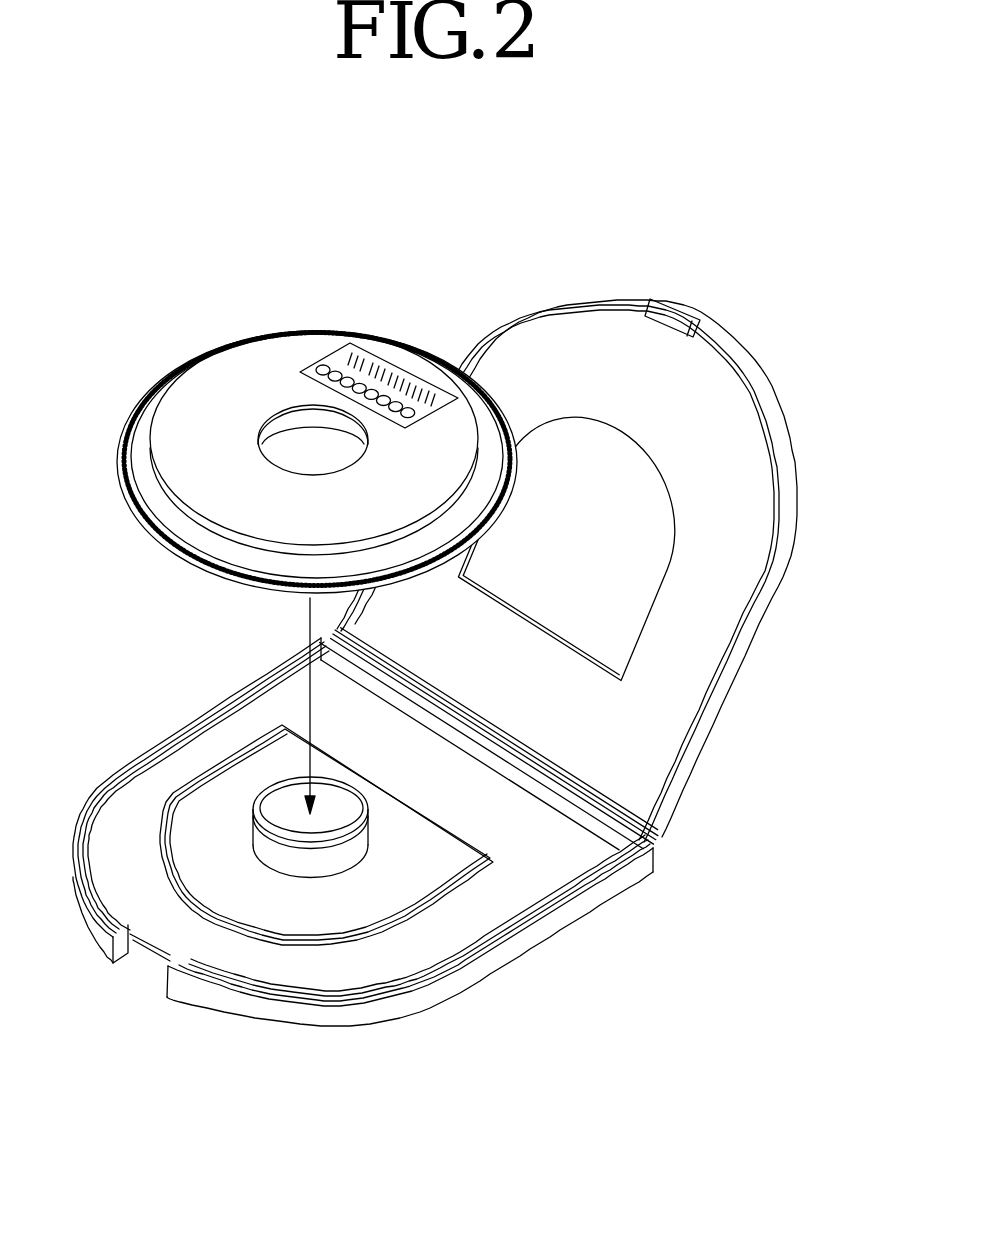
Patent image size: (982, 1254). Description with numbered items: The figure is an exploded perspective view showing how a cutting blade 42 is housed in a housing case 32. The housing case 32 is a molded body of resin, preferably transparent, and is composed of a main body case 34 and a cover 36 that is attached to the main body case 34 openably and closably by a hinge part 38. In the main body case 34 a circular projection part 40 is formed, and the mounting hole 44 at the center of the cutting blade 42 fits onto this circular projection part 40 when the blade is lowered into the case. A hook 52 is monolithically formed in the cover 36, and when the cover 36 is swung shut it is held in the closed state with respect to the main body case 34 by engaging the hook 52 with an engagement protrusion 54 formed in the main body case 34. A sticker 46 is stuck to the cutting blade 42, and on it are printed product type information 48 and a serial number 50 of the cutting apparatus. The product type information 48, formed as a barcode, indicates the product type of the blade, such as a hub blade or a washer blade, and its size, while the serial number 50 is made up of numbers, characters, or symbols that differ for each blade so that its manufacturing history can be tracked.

The housing case 32 is at (524, 966).
The main body case 34 is at (352, 1022).
The cover 36 is at (772, 592).
The hinge part 38 is at (565, 782).
The circular projection part 40 is at (340, 808).
The cutting blade 42 is at (170, 358).
The mounting hole 44 is at (296, 417).
The sticker 46 is at (378, 341).
The product type information 48 is at (405, 384).
The serial number 50 is at (358, 388).
The hook 52 is at (676, 316).
The engagement protrusion 54 is at (150, 947).